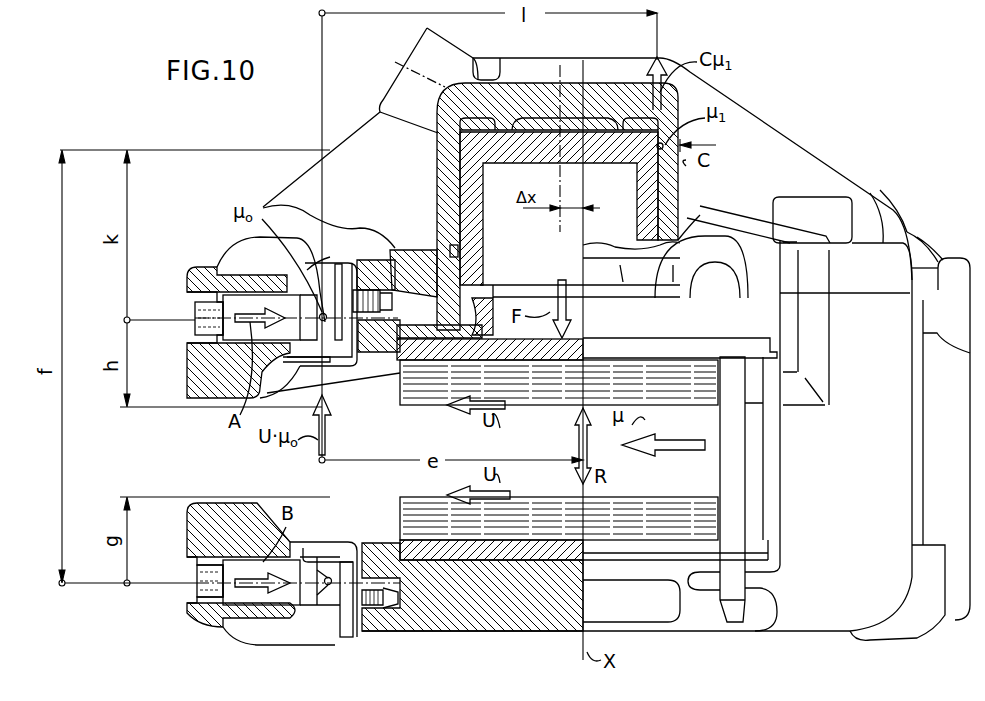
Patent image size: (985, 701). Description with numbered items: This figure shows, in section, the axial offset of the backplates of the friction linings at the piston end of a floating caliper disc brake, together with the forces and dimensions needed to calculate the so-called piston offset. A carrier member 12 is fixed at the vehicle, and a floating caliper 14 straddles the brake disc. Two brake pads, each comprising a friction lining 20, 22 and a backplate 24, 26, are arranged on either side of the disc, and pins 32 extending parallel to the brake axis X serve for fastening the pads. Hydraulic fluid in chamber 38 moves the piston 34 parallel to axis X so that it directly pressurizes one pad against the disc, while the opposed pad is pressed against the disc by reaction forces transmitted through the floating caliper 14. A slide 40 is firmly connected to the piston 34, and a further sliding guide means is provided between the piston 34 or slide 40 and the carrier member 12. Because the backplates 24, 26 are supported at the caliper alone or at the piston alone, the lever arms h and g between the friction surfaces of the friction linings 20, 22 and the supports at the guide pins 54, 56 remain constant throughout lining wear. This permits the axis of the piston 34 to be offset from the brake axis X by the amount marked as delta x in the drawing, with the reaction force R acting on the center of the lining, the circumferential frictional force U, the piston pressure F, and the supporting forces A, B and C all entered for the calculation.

The carrier member 12 is at (203, 374).
The floating caliper 14 is at (440, 187).
The friction lining 20 is at (553, 531).
The friction lining 22 is at (556, 394).
The backplate 24 is at (645, 547).
The backplate 26 is at (636, 352).
The pins 32 is at (748, 465).
The piston 34 is at (478, 246).
The chamber 38 is at (482, 125).
The slide 40 is at (372, 352).
The guide pin 54 is at (258, 598).
The guide pin 56 is at (237, 298).